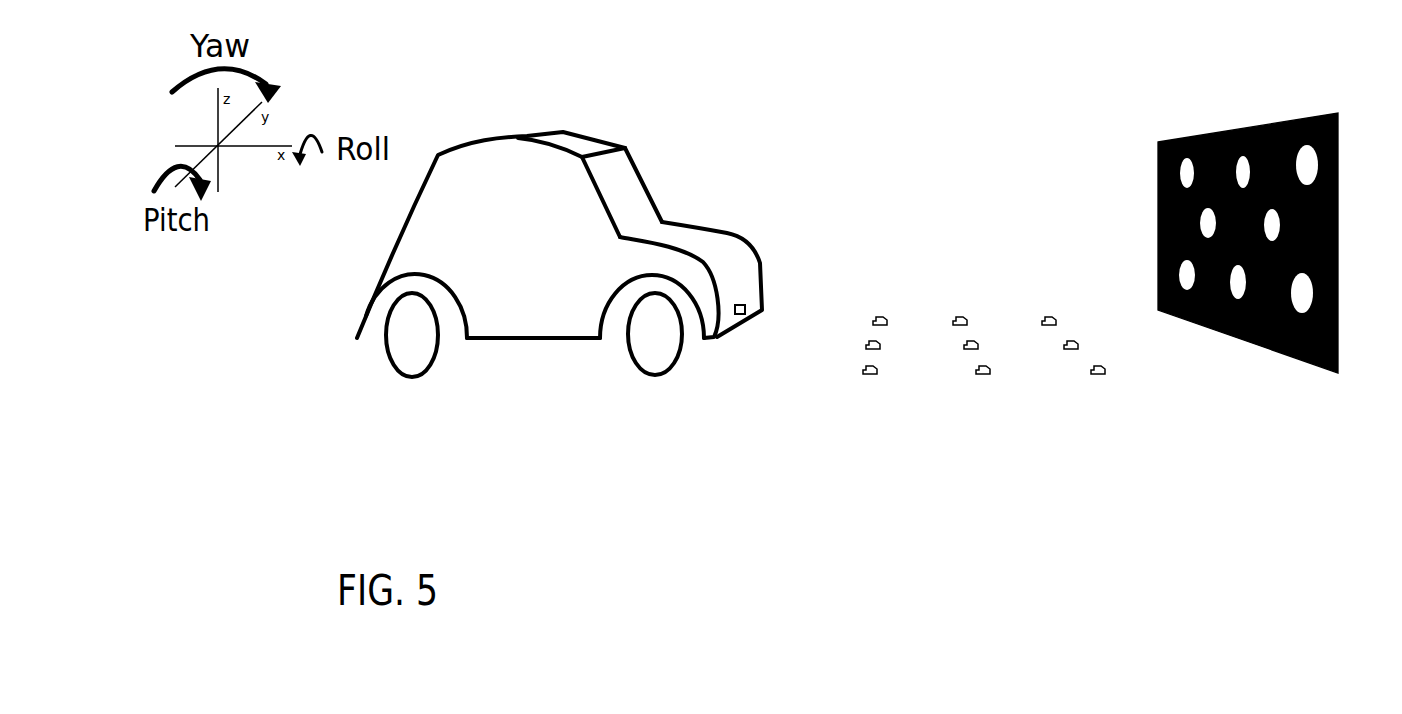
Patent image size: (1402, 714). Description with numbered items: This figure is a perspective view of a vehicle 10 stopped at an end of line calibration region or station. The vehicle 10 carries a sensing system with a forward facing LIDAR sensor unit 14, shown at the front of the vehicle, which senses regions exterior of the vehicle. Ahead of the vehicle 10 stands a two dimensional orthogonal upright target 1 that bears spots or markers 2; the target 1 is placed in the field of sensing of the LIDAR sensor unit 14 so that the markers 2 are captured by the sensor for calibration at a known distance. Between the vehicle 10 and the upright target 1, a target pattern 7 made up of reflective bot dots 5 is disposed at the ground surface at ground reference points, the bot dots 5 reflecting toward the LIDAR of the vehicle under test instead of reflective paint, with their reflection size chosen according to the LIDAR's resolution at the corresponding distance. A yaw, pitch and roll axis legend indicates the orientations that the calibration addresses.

The target 1 is at (1330, 368).
The spots or markers 2 is at (1338, 337).
The reflective bot dots 5 is at (1102, 371).
The target pattern 7 is at (935, 345).
The vehicle 10 is at (487, 318).
The forward facing LIDAR sensor unit 14 is at (747, 323).